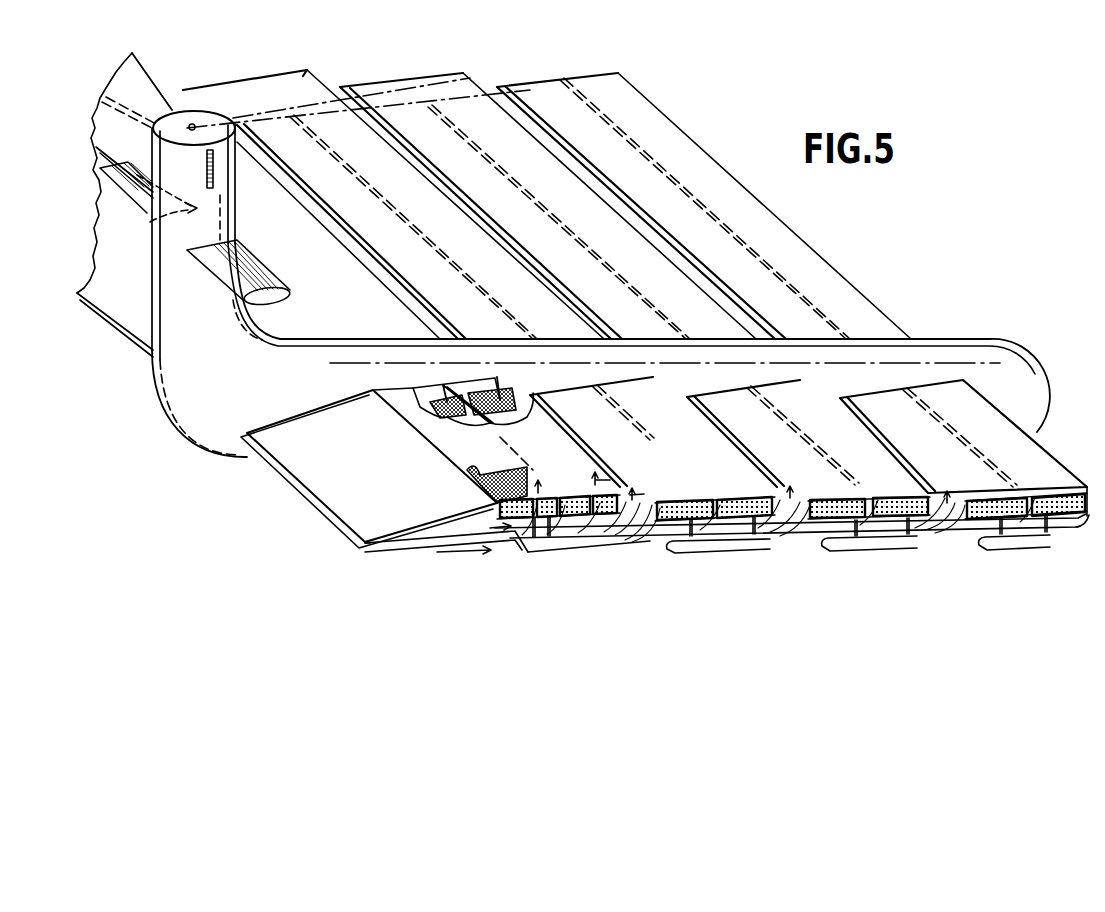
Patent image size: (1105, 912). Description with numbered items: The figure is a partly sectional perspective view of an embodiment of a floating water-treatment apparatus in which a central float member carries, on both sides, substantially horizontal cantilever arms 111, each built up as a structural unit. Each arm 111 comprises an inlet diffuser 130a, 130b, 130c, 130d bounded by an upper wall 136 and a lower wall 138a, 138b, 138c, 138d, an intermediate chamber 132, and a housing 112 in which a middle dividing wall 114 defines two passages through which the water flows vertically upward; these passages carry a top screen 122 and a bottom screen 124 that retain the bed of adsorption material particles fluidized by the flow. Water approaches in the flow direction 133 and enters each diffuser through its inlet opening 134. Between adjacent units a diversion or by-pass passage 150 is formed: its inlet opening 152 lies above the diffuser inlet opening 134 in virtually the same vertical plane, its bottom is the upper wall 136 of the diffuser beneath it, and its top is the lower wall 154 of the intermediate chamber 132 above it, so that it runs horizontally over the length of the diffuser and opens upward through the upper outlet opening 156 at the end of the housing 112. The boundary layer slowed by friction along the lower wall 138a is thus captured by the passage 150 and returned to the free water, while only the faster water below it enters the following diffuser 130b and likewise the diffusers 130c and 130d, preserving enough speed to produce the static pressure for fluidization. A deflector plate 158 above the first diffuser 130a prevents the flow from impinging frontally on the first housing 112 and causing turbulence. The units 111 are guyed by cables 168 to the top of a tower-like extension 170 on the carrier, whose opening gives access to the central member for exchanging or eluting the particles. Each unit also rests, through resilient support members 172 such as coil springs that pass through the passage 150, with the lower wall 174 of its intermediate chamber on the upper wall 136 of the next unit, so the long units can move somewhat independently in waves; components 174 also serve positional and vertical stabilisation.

The cantilever arm 111 is at (617, 97).
The housing 112 is at (613, 487).
The middle dividing wall 114 is at (462, 397).
The top screen 122 is at (503, 407).
The bottom screen 124 is at (457, 467).
The first inlet diffuser 130a is at (387, 552).
The second inlet diffuser 130b is at (627, 533).
The third inlet diffuser 130c is at (757, 540).
The fourth inlet diffuser 130d is at (880, 547).
The intermediate chamber 132 is at (1025, 547).
The flow direction 133 is at (448, 553).
The inlet opening 134 is at (333, 520).
The upper wall 136 is at (602, 527).
The lower wall 138a is at (413, 550).
The lower wall 138b is at (647, 537).
The lower wall 138c is at (803, 547).
The lower wall 138d is at (937, 553).
The diversion passage 150 is at (577, 533).
The inlet opening 152 is at (517, 550).
The lower wall 154 is at (603, 480).
The upper outlet opening 156 is at (637, 493).
The deflector plate 158 is at (333, 403).
The cables 168 is at (460, 88).
The tower-like extension 170 is at (160, 250).
The support member 172 is at (857, 540).
The lower wall / stabilisation component 174 is at (227, 273).